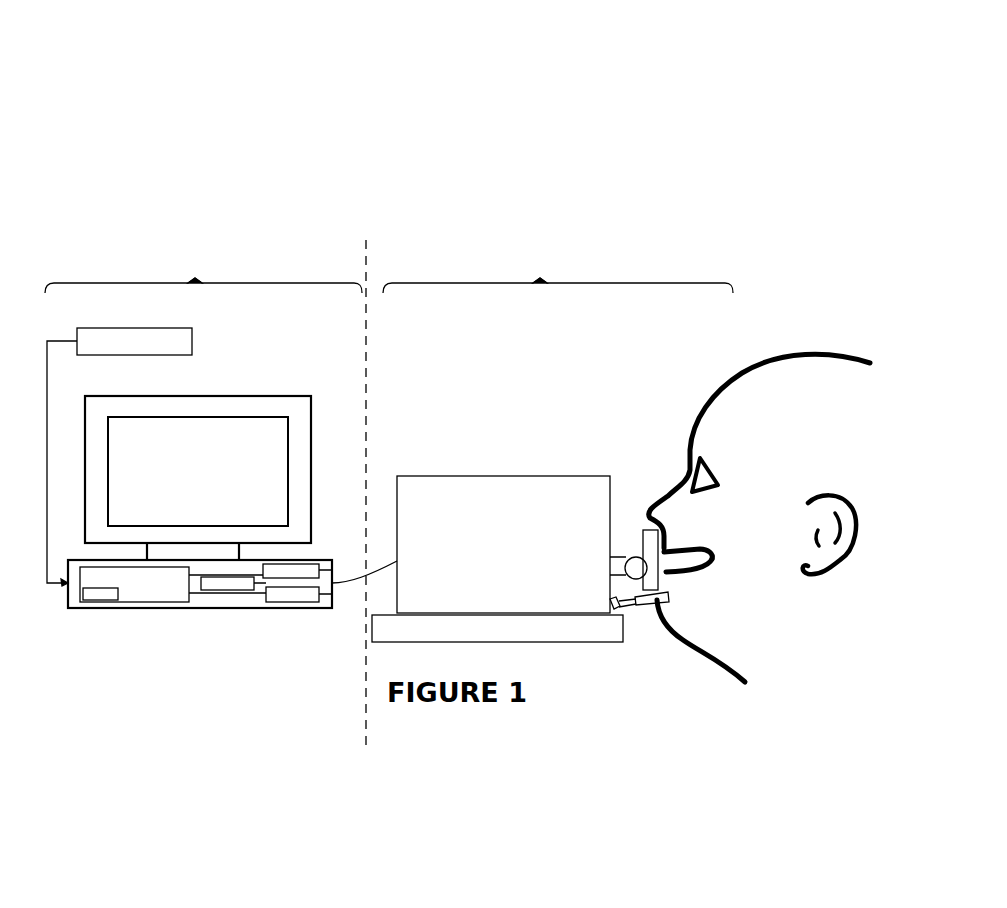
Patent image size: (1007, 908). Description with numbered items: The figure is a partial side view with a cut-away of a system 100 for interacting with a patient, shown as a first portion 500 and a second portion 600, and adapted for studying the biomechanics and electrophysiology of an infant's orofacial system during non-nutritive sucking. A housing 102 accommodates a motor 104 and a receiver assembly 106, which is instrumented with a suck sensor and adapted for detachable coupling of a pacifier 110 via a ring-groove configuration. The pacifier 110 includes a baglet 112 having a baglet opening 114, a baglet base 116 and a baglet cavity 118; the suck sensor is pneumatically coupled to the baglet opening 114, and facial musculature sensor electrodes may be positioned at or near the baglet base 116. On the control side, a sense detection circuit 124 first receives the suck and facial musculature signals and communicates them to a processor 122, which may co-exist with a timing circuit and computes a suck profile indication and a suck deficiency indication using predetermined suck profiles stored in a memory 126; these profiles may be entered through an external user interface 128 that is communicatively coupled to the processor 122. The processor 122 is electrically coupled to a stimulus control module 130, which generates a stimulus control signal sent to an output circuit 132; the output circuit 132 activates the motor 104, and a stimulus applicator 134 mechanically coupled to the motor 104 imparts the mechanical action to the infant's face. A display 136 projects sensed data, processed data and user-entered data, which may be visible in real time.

The system 100 is at (316, 110).
The housing 102 is at (492, 498).
The motor 104 is at (622, 645).
The receiver assembly 106 is at (640, 528).
The pacifier 110 is at (712, 530).
The baglet 112 is at (690, 565).
The baglet opening 114 is at (716, 560).
The baglet base 116 is at (670, 600).
The baglet cavity 118 is at (666, 579).
The processor 122 is at (138, 592).
The sense detection circuit 124 is at (320, 580).
The memory 126 is at (83, 600).
The external user interface 128 is at (183, 337).
The stimulus control module 130 is at (253, 590).
The output circuit 132 is at (290, 600).
The stimulus applicator 134 is at (655, 606).
The display 136 is at (240, 440).
The first portion 500 is at (558, 272).
The second portion 600 is at (203, 269).